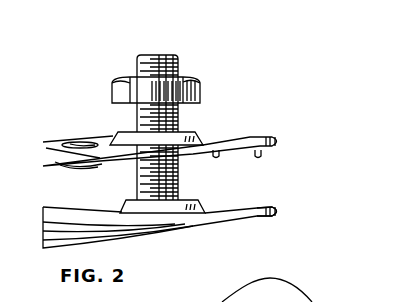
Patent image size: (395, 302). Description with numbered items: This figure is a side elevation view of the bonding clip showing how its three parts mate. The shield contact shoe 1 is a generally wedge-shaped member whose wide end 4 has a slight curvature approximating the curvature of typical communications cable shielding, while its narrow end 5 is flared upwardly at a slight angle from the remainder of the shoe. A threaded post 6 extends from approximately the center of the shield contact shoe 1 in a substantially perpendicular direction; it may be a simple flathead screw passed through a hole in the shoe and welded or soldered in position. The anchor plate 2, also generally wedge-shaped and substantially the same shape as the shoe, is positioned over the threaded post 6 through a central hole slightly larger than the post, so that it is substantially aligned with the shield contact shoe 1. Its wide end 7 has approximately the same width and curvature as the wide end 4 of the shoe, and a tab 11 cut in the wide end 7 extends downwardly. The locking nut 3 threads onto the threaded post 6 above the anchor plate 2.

The shield contact shoe 1 is at (160, 224).
The anchor plate 2 is at (183, 148).
The locking nut 3 is at (127, 85).
The wide end 4 is at (47, 220).
The narrow end 5 is at (265, 205).
The threaded post 6 is at (137, 176).
The wide end 7 is at (50, 149).
The tab 11 is at (82, 170).